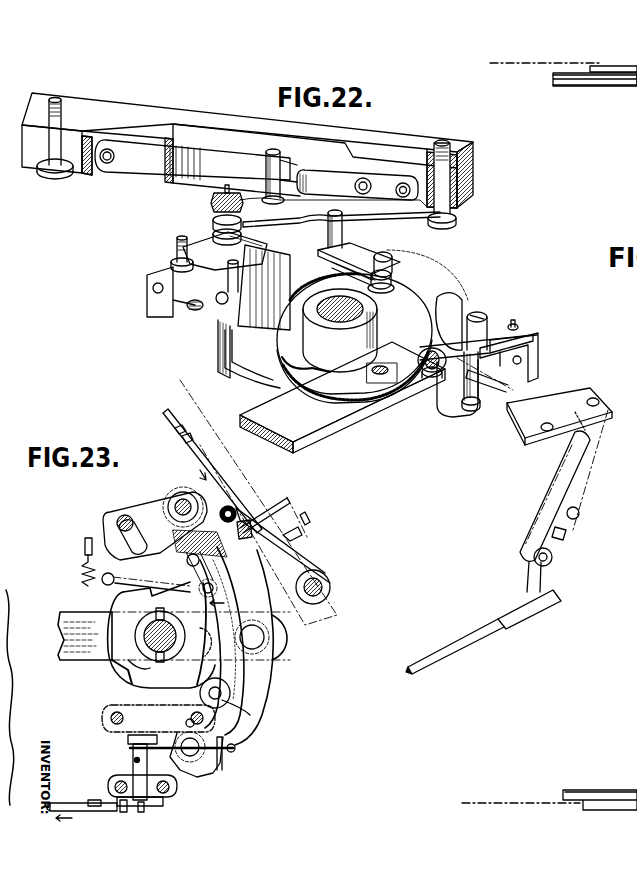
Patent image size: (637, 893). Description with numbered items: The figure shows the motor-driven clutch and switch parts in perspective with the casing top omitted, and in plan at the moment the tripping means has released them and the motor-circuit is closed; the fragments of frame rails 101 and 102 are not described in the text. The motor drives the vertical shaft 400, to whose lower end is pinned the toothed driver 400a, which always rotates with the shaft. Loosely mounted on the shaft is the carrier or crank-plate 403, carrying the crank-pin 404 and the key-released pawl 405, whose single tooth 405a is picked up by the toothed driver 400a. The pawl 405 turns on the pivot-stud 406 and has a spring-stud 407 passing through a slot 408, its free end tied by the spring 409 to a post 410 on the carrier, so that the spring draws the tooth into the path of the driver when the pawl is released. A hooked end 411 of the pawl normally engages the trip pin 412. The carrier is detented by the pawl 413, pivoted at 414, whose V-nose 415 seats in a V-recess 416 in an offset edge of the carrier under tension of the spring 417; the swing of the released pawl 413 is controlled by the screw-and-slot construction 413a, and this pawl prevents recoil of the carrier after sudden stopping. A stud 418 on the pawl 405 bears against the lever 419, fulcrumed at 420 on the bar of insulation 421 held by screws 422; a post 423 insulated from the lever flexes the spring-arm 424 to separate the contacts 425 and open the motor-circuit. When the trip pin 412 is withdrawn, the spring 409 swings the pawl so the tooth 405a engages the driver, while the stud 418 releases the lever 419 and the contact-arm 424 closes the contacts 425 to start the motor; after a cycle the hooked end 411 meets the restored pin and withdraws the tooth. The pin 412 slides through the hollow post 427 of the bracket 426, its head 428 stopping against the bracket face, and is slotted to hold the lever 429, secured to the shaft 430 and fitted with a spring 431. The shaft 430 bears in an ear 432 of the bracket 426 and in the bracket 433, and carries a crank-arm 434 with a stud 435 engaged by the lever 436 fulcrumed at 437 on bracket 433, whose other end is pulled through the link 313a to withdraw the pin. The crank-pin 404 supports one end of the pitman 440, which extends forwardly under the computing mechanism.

In FIG. 23, the frame rail 101 is at (603, 789).
In FIG. 22, the frame rail 102 is at (612, 87).
In FIG. 22, the link 313a is at (460, 648).
In FIG. 23, the link 313a is at (50, 801).
In FIG. 22, the vertical shaft 400 is at (340, 330).
In FIG. 23, the vertical shaft 400 is at (163, 611).
In FIG. 22, the toothed driver 400a is at (310, 367).
In FIG. 23, the toothed driver 400a is at (126, 670).
In FIG. 22, the carrier or crank-plate 403 is at (303, 398).
In FIG. 23, the carrier or crank-plate 403 is at (255, 680).
In FIG. 23, the crank-pin 404 is at (265, 642).
In FIG. 22, the key-released pawl 405 is at (393, 281).
In FIG. 23, the key-released pawl 405 is at (217, 685).
In FIG. 22, the tooth 405a is at (381, 365).
In FIG. 23, the tooth 405a is at (207, 645).
In FIG. 22, the pivot-stud 406 is at (462, 291).
In FIG. 23, the pivot-stud 406 is at (243, 697).
In FIG. 22, the spring-stud 407 is at (390, 255).
In FIG. 23, the spring-stud 407 is at (210, 582).
In FIG. 22, the slot 408 is at (333, 265).
In FIG. 23, the slot 408 is at (265, 611).
In FIG. 22, the spring 409 is at (262, 370).
In FIG. 23, the spring 409 is at (142, 588).
In FIG. 23, the post 410 is at (104, 584).
In FIG. 22, the hooked end 411 is at (450, 418).
In FIG. 23, the hooked end 411 is at (196, 779).
In FIG. 22, the trip pin 412 is at (472, 408).
In FIG. 23, the trip pin 412 is at (220, 742).
In FIG. 22, the detent-pawl 413 is at (192, 242).
In FIG. 23, the detent-pawl 413 is at (155, 526).
In FIG. 22, the screw-and-slot construction 413a is at (176, 243).
In FIG. 23, the screw-and-slot construction 413a is at (128, 510).
In FIG. 22, the pivot-stud 414 is at (214, 196).
In FIG. 23, the pivot-stud 414 is at (180, 500).
In FIG. 22, the V-nose 415 is at (226, 280).
In FIG. 23, the V-nose 415 is at (188, 554).
In FIG. 22, the V-recess 416 is at (264, 287).
In FIG. 23, the V-recess 416 is at (122, 548).
In FIG. 22, the spring 417 is at (192, 310).
In FIG. 23, the spring 417 is at (82, 572).
In FIG. 22, the stud 418 is at (324, 238).
In FIG. 22, the lever 419 is at (310, 205).
In FIG. 22, the fulcrum 420 is at (455, 223).
In FIG. 23, the fulcrum 420 is at (331, 584).
In FIG. 22, the bar of insulation 421 is at (247, 150).
In FIG. 23, the bar of insulation 421 is at (315, 560).
In FIG. 22, the screws 422 is at (58, 97).
In FIG. 22, the post 423 is at (276, 148).
In FIG. 23, the post 423 is at (237, 508).
In FIG. 22, the spring-arm 424 is at (192, 160).
In FIG. 23, the spring-arm 424 is at (204, 455).
In FIG. 22, the contacts 425 is at (310, 172).
In FIG. 23, the contacts 425 is at (286, 500).
In FIG. 22, the bracket 426 is at (540, 336).
In FIG. 23, the bracket 426 is at (97, 720).
In FIG. 22, the hollow post 427 is at (510, 385).
In FIG. 22, the head 428 is at (484, 312).
In FIG. 23, the head 428 is at (185, 721).
In FIG. 22, the lever 429 is at (460, 345).
In FIG. 23, the lever 429 is at (236, 748).
In FIG. 22, the shaft 430 is at (512, 418).
In FIG. 23, the shaft 430 is at (133, 763).
In FIG. 22, the spring 431 is at (517, 326).
In FIG. 23, the spring 431 is at (233, 752).
In FIG. 22, the ear 432 is at (428, 382).
In FIG. 23, the ear 432 is at (143, 735).
In FIG. 22, the bracket 433 is at (608, 425).
In FIG. 23, the bracket 433 is at (168, 799).
In FIG. 22, the crank-arm 434 is at (560, 470).
In FIG. 23, the crank-arm 434 is at (173, 791).
In FIG. 22, the stud 435 is at (580, 513).
In FIG. 23, the stud 435 is at (140, 812).
In FIG. 22, the lever 436 is at (565, 537).
In FIG. 23, the lever 436 is at (120, 812).
In FIG. 22, the fulcrum 437 is at (552, 561).
In FIG. 23, the fulcrum 437 is at (95, 800).
In FIG. 22, the pitman 440 is at (343, 432).
In FIG. 23, the pitman 440 is at (90, 661).